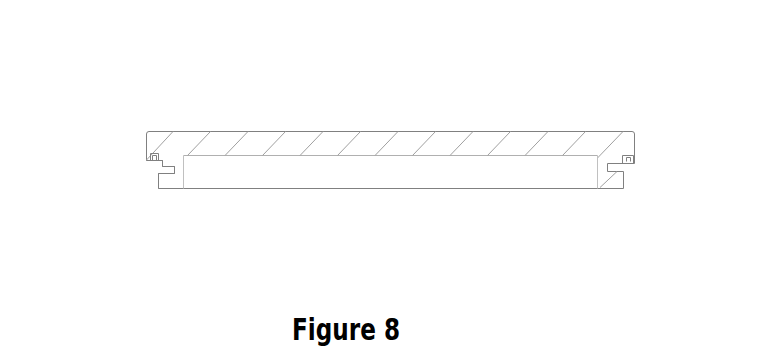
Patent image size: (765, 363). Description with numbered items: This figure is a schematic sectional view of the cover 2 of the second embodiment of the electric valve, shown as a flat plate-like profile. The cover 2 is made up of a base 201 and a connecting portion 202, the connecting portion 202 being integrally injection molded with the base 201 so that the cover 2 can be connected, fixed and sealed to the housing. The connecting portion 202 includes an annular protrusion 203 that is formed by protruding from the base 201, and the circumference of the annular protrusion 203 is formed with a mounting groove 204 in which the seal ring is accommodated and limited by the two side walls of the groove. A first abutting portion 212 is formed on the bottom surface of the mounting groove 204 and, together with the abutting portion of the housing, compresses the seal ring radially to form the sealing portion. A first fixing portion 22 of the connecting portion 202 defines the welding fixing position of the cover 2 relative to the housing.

The cover 2 is at (442, 132).
The base 201 is at (518, 145).
The first fixing portion 22 is at (151, 156).
The connecting portion 202 is at (141, 167).
The mounting groove 204 is at (165, 169).
The annular protrusion 203 is at (173, 181).
The first abutting portion 212 is at (183, 173).